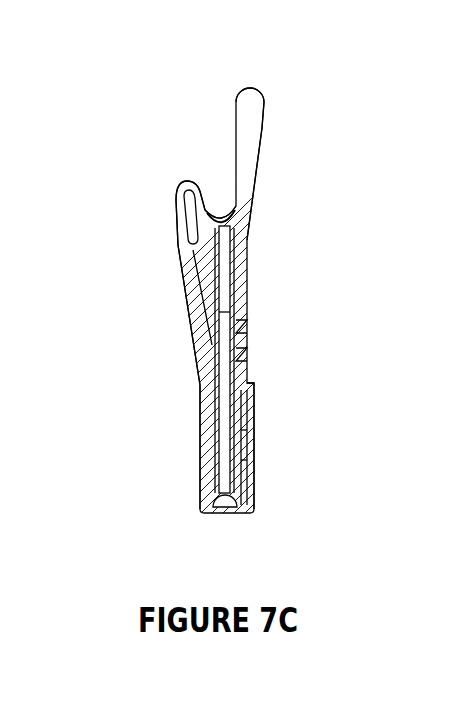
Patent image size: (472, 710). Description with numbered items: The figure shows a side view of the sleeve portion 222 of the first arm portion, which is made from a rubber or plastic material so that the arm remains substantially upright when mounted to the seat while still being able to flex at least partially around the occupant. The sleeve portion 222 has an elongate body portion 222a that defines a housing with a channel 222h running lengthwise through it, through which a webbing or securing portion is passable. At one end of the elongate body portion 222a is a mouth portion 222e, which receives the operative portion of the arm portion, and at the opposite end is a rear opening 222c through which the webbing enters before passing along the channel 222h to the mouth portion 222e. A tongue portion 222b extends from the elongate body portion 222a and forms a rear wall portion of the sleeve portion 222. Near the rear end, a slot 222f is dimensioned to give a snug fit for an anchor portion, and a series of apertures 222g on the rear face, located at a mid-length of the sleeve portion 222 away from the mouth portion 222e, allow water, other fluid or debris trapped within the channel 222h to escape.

The sleeve portion 222 is at (111, 140).
The elongate body portion 222a is at (197, 315).
The tongue portion 222b is at (262, 115).
The rear opening 222c is at (222, 500).
The mouth portion 222e is at (214, 216).
The slot 222f is at (247, 470).
The apertures 222g is at (243, 325).
The channel 222h is at (223, 422).